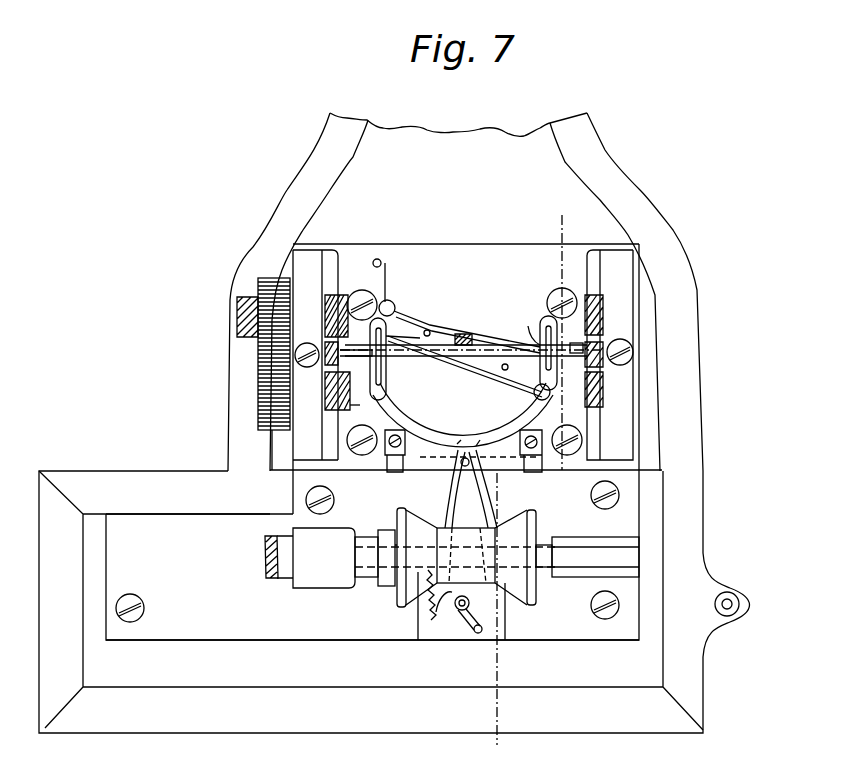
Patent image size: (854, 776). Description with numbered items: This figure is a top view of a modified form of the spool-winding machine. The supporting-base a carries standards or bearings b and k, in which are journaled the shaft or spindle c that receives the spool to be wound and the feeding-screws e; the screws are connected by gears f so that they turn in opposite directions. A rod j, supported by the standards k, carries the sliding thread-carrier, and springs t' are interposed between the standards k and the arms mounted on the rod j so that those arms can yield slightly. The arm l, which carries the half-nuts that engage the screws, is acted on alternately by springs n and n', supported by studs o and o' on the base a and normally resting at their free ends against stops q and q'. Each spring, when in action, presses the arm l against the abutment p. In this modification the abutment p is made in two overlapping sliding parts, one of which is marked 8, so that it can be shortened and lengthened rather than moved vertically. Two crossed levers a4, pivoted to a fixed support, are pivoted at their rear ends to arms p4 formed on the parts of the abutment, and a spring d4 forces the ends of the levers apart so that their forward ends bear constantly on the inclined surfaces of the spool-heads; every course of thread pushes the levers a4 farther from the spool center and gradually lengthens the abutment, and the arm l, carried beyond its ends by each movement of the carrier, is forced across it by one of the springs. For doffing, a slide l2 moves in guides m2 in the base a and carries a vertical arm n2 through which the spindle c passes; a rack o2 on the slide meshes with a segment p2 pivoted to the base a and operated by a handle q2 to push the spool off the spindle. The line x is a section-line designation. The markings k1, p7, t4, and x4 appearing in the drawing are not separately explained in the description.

The supporting-base a is at (372, 560).
The crossed levers a4 is at (447, 430).
The standards or bearings b is at (330, 558).
The shaft or spindle c is at (535, 540).
The spring d4 is at (484, 431).
The feeding-screw e is at (360, 410).
The gears f is at (280, 283).
The rod j is at (355, 363).
The standards k is at (470, 355).
The spool hub k1 is at (455, 557).
The arm having the half-nuts l is at (465, 334).
The slide l2 is at (554, 556).
The guides m2 is at (591, 539).
The spring n is at (465, 366).
The spring n' is at (499, 329).
The vertical arm n2 is at (393, 580).
The stud o is at (548, 394).
The stud o' is at (396, 287).
The rack o2 is at (461, 606).
The abutment p is at (464, 352).
The segment p2 is at (447, 598).
The arms p4 is at (529, 326).
The link p7 is at (418, 360).
The stop q is at (500, 390).
The stop q' is at (467, 321).
The handle q2 is at (476, 630).
The springs t' is at (473, 371).
The pin t4 is at (461, 430).
The section line x is at (528, 482).
The nut x4 is at (576, 349).
The part of the abutment 8 is at (510, 367).